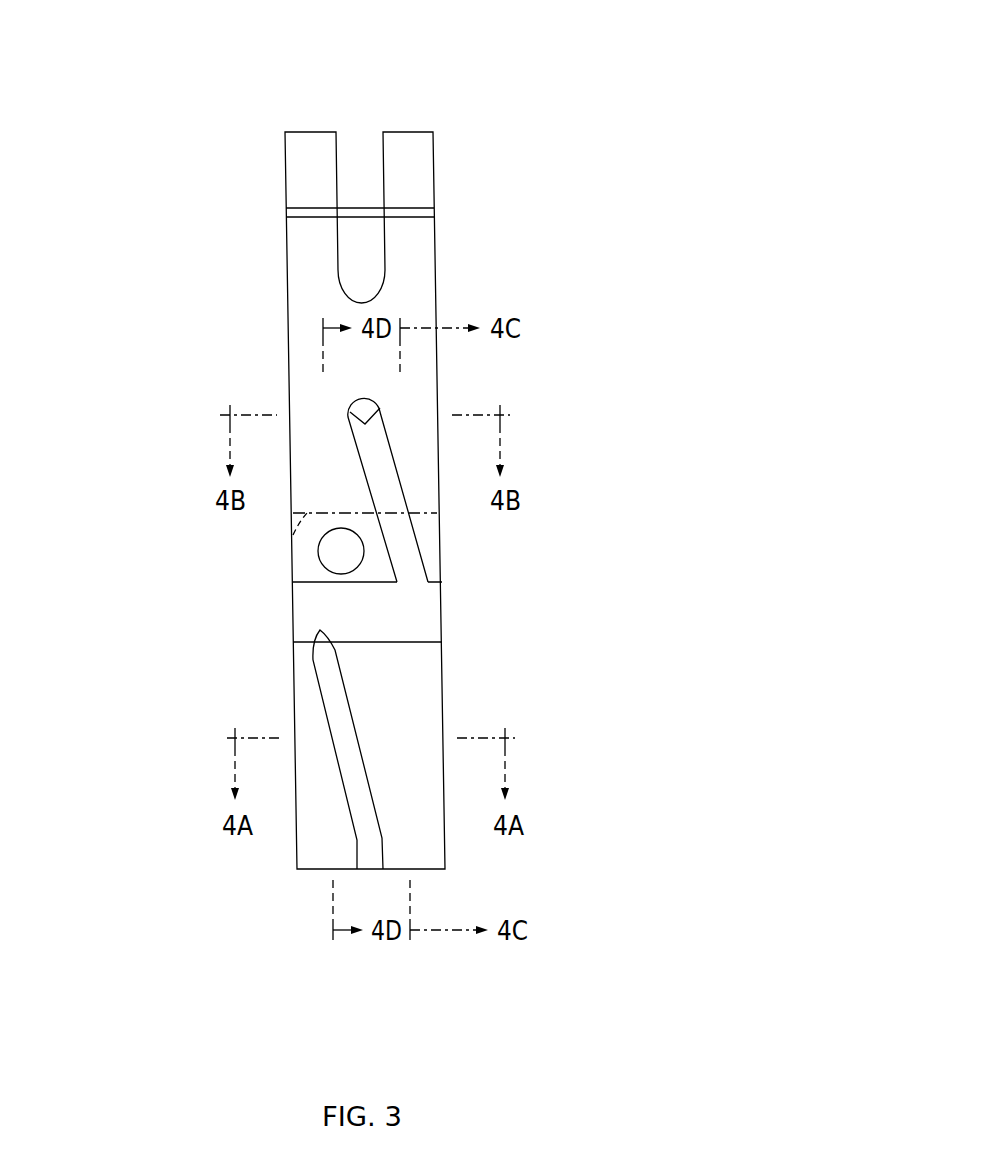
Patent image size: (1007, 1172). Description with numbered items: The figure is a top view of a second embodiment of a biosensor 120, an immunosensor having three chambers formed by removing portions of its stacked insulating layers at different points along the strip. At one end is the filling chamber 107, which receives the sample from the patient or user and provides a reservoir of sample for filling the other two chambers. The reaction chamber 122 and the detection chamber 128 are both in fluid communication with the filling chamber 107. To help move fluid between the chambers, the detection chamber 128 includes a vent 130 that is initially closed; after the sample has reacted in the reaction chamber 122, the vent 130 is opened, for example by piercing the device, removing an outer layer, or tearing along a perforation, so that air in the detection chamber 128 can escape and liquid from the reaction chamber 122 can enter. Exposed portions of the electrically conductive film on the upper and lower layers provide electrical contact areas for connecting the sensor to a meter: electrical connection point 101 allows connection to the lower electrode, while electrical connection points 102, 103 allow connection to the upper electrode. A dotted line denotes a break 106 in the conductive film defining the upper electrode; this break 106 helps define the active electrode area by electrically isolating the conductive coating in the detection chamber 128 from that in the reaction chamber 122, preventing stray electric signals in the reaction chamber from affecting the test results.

The biosensor 120 is at (495, 60).
The electrical connection point 101 is at (305, 178).
The electrical connection point 102 is at (358, 255).
The vent 130 is at (358, 408).
The detection chamber 128 is at (383, 487).
The break in the electrically conductive film 106 is at (293, 533).
The electrical connection point 103 is at (335, 557).
The reaction chamber 122 is at (367, 615).
The filling chamber 107 is at (357, 792).